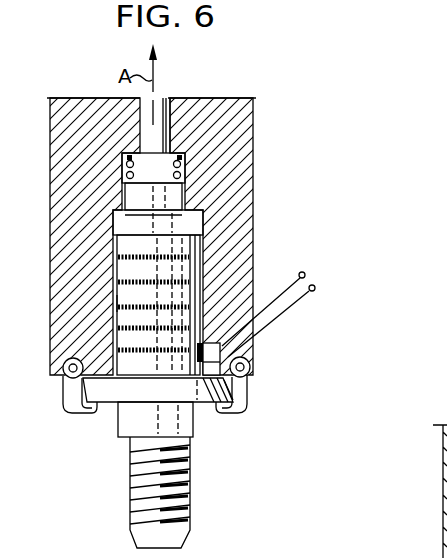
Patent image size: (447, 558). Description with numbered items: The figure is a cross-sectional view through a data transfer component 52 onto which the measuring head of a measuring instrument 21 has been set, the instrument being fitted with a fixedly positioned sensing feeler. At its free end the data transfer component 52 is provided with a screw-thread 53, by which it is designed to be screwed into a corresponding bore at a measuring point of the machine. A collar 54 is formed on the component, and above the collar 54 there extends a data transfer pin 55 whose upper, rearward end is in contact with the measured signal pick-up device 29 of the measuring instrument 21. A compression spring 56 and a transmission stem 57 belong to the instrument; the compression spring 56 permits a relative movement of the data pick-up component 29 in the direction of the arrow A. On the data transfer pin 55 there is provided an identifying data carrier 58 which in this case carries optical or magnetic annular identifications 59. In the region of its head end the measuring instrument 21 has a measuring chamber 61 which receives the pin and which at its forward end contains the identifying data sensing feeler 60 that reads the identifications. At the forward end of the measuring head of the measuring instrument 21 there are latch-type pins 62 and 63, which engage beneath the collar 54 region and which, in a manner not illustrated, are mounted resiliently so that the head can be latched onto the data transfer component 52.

The measuring instrument 21 is at (266, 121).
The measured signal pick-up device 29 is at (177, 197).
The data transfer component 52 is at (200, 485).
The screw-thread 53 is at (140, 507).
The collar 54 is at (203, 401).
The data transfer pin 55 is at (175, 222).
The compression spring 56 is at (174, 151).
The transmission stem 57 is at (170, 126).
The identifying data carrier 58 is at (185, 247).
The annular identifications 59 is at (127, 262).
The identifying data sensing feeler 60 is at (210, 350).
The measuring chamber 61 is at (115, 303).
The latch-type pin 62 is at (240, 392).
The latch-type pin 63 is at (73, 402).